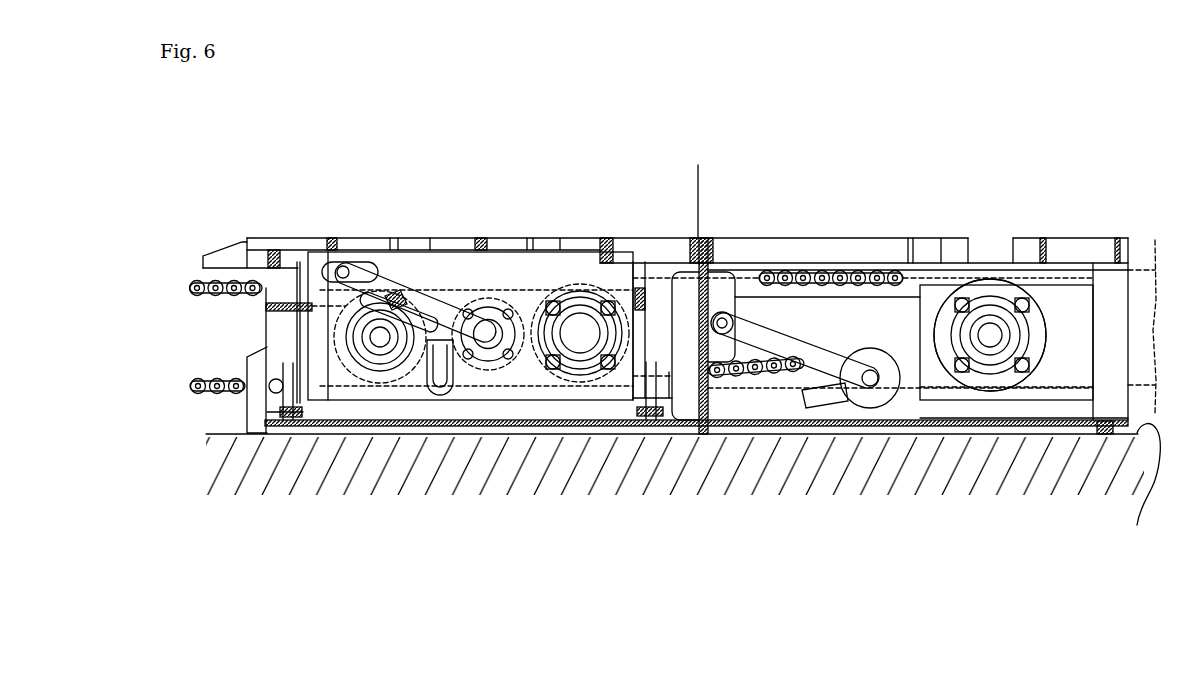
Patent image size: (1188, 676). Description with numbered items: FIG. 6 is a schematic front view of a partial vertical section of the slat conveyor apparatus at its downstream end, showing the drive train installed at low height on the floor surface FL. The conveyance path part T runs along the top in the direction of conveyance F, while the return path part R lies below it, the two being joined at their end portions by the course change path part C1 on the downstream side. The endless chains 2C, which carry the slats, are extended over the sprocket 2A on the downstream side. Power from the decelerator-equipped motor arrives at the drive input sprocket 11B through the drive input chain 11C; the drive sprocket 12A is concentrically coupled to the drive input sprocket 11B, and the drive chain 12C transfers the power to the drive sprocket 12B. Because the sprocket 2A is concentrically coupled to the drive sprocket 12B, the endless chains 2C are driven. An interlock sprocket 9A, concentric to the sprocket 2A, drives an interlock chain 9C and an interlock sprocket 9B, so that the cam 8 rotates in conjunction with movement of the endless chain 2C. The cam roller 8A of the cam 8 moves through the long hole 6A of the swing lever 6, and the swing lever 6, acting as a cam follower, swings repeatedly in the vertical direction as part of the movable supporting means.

The endless chains 2C is at (247, 275).
The long hole 6A is at (343, 261).
The cam 8 is at (369, 296).
The cam roller 8A is at (389, 292).
The course change path part C1 is at (434, 268).
The interlock sprocket 9B is at (376, 372).
The interlock chain 9C is at (468, 296).
The drive sprocket 12B is at (569, 282).
The sprocket 2A is at (531, 290).
The interlock sprocket 9A is at (573, 397).
The swing lever 6 is at (459, 383).
The drive chain 12C is at (796, 271).
The drive input chain 11C is at (1073, 250).
The drive input sprocket 11B is at (988, 290).
The drive sprocket 12A is at (990, 335).
The floor surface FL is at (1143, 487).
The conveyance path part T is at (209, 240).
The direction of conveyance F is at (293, 162).
The return path part R is at (212, 418).